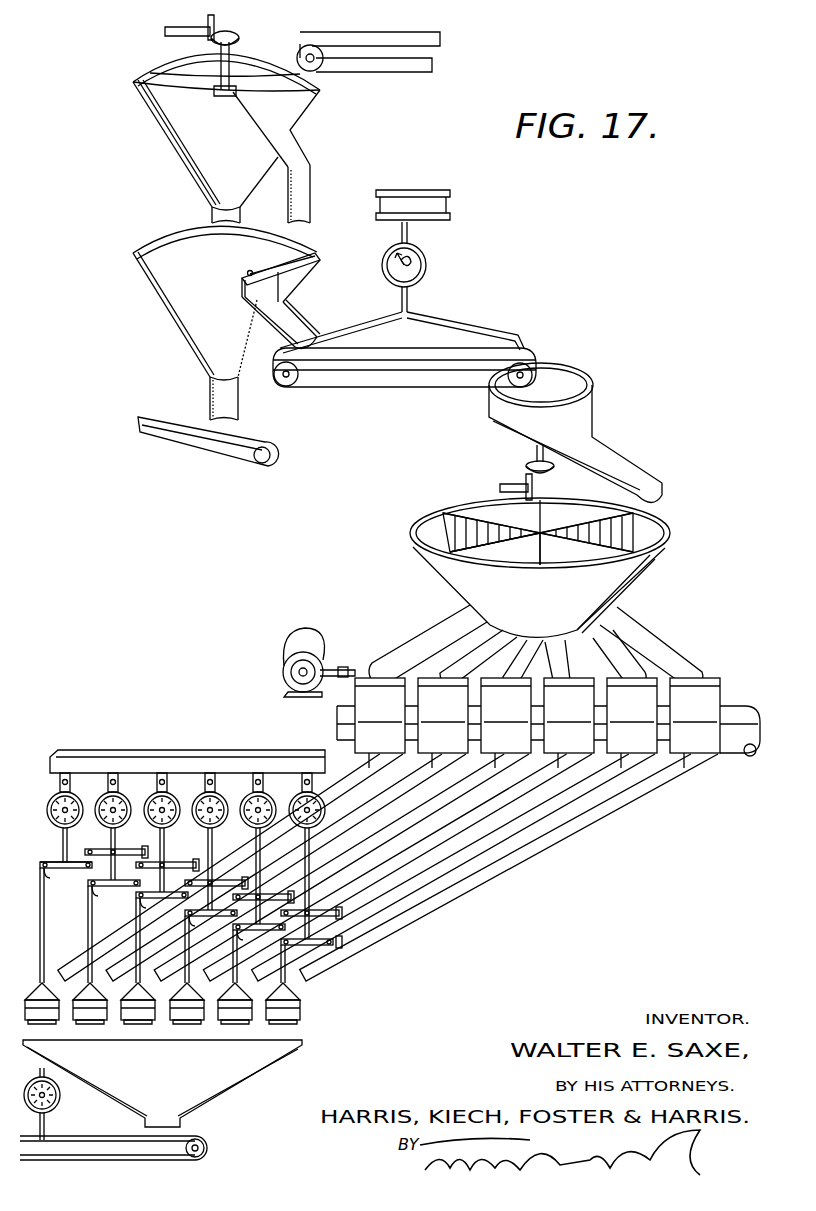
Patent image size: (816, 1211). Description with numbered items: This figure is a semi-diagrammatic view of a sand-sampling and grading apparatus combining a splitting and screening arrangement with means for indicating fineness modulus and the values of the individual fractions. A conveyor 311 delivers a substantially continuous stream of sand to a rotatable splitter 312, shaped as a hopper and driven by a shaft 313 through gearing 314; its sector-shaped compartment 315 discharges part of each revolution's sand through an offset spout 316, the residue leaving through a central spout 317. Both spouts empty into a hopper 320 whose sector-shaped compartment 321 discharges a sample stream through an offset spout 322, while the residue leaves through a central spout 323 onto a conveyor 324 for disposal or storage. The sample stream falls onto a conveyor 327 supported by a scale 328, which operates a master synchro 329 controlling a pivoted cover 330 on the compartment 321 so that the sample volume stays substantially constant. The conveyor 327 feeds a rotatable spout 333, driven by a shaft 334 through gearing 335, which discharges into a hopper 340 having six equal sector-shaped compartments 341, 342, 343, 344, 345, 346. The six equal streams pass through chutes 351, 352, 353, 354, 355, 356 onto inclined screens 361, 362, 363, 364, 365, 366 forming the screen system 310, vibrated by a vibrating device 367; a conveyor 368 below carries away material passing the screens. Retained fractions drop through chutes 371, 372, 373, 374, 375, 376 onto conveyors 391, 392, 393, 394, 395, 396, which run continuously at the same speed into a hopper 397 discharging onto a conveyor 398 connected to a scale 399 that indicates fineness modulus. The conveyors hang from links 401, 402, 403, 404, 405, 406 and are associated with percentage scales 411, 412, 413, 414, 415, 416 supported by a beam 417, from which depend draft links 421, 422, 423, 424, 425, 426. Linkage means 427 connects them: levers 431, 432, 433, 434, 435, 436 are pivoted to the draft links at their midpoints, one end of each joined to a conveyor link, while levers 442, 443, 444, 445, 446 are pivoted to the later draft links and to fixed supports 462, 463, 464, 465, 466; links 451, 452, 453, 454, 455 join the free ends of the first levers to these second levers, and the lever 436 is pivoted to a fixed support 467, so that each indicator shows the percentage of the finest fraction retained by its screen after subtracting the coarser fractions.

The screen system 310 is at (750, 694).
The conveyor 311 is at (392, 72).
The splitter 312 is at (182, 140).
The shaft 313 is at (205, 32).
The gearing 314 is at (238, 38).
The sector-shaped compartment 315 is at (292, 100).
The offset spout 316 is at (312, 191).
The central spout 317 is at (211, 216).
The hopper 320 is at (195, 350).
The sector-shaped compartment 321 is at (272, 281).
The offset spout 322 is at (303, 330).
The central spout 323 is at (209, 390).
The conveyor 324 is at (185, 460).
The conveyor 327 is at (392, 388).
The scale 328 is at (425, 283).
The master synchro 329 is at (420, 256).
The pivoted cover 330 is at (295, 250).
The rotatable spout 333 is at (614, 452).
The shaft 334 is at (498, 488).
The gearing 335 is at (522, 463).
The hopper 340 is at (405, 545).
The sector-shaped compartment 341 is at (476, 508).
The sector-shaped compartment 342 is at (412, 517).
The sector-shaped compartment 343 is at (470, 563).
The sector-shaped compartment 344 is at (624, 560).
The sector-shaped compartment 345 is at (656, 528).
The sector-shaped compartment 346 is at (568, 528).
The chute 351 is at (381, 684).
The chute 352 is at (444, 684).
The chute 353 is at (507, 684).
The chute 354 is at (570, 684).
The chute 355 is at (633, 684).
The chute 356 is at (696, 684).
The inclined screen 361 is at (380, 733).
The inclined screen 362 is at (443, 733).
The inclined screen 363 is at (506, 733).
The inclined screen 364 is at (569, 733).
The inclined screen 365 is at (632, 733).
The inclined screen 366 is at (695, 733).
The vibrating device 367 is at (286, 640).
The conveyor 368 is at (345, 709).
The chute 371 is at (226, 867).
The chute 372 is at (283, 867).
The chute 373 is at (338, 867).
The chute 374 is at (394, 867).
The chute 375 is at (418, 888).
The chute 376 is at (488, 889).
The conveyor 391 is at (40, 1025).
The conveyor 392 is at (96, 1025).
The conveyor 393 is at (150, 1025).
The conveyor 394 is at (196, 1025).
The conveyor 395 is at (242, 1025).
The conveyor 396 is at (294, 1025).
The hopper 397 is at (245, 1082).
The conveyor 398 is at (132, 1168).
The scale 399 is at (58, 1103).
The link 401 is at (38, 918).
The link 402 is at (86, 940).
The link 403 is at (134, 958).
The link 404 is at (183, 948).
The link 405 is at (231, 963).
The link 406 is at (279, 973).
The scale 411 is at (48, 800).
The scale 412 is at (100, 788).
The scale 413 is at (150, 788).
The scale 414 is at (198, 788).
The scale 415 is at (246, 788).
The scale 416 is at (294, 788).
The beam 417 is at (58, 760).
The draft link 421 is at (68, 840).
The draft link 422 is at (116, 840).
The draft link 423 is at (165, 843).
The draft link 424 is at (213, 846).
The draft link 425 is at (261, 852).
The draft link 426 is at (310, 857).
The linkage means 427 is at (55, 866).
The lever 431 is at (40, 864).
The lever 432 is at (90, 887).
The lever 433 is at (138, 899).
The lever 434 is at (188, 917).
The lever 435 is at (240, 931).
The lever 436 is at (296, 946).
The lever 442 is at (113, 844).
The lever 443 is at (165, 870).
The lever 444 is at (217, 876).
The lever 445 is at (268, 892).
The lever 446 is at (325, 908).
The link 451 is at (58, 877).
The link 452 is at (109, 888).
The link 453 is at (156, 906).
The link 454 is at (212, 926).
The link 455 is at (300, 985).
The fixed support 462 is at (145, 848).
The fixed support 463 is at (192, 862).
The fixed support 464 is at (245, 877).
The fixed support 465 is at (291, 892).
The fixed support 466 is at (343, 910).
The fixed support 467 is at (345, 948).